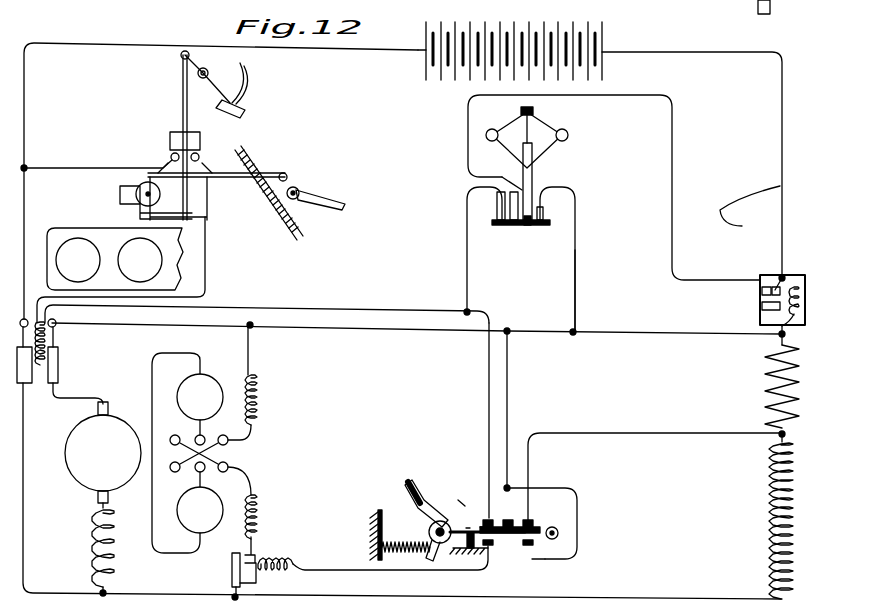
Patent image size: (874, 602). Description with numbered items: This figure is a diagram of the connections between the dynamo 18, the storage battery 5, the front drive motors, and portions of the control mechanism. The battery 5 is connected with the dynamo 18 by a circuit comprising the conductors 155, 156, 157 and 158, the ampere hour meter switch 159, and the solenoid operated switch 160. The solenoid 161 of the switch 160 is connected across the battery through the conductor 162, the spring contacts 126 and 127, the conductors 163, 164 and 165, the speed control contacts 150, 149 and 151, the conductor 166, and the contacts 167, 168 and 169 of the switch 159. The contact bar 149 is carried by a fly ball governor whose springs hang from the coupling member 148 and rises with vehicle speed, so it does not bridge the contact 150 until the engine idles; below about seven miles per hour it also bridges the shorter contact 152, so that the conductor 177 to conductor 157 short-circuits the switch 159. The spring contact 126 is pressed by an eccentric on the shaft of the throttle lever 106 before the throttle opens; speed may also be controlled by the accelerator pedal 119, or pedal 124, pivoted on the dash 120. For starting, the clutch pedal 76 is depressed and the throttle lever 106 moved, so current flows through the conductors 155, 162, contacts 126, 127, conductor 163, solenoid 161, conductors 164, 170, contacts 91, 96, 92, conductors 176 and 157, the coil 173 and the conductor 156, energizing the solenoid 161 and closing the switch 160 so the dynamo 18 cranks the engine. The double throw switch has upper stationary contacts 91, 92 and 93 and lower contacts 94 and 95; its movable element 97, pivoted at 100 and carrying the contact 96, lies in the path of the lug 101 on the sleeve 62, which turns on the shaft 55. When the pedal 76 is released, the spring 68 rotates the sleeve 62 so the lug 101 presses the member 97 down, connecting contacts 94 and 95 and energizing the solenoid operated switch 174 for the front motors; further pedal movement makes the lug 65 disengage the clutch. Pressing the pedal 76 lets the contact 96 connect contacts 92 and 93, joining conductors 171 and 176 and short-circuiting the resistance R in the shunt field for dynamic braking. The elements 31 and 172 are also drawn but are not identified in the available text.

The storage battery 5 is at (455, 85).
The dynamo 18 is at (95, 478).
The relay coils 31 is at (205, 385).
The shaft 55 is at (448, 545).
The sleeve 62 is at (441, 521).
The lug 65 is at (430, 556).
The spring 68 is at (402, 542).
The clutch pedal 76 is at (416, 489).
The upper stationary contact 91 is at (482, 522).
The upper stationary contact 92 is at (512, 520).
The upper stationary contact 93 is at (540, 528).
The lower stationary contact 94 is at (495, 545).
The lower stationary contact 95 is at (552, 558).
The contact 96 is at (498, 518).
The movable element 97 is at (470, 525).
The pivot 100 is at (562, 533).
The lug 101 is at (462, 500).
The throttle lever 106 is at (236, 93).
The accelerator pedal 119 is at (298, 195).
The dash 120 is at (305, 228).
The pedal 124 is at (338, 206).
The spring contact 126 is at (170, 158).
The second spring contact 127 is at (233, 447).
The coupling member 148 is at (535, 112).
The contact bar 149 is at (503, 225).
The contact 150 is at (497, 205).
The contact 151 is at (528, 226).
The contact 152 is at (545, 213).
The conductor 155 is at (380, 52).
The conductor 156 is at (708, 53).
The conductor 157 is at (392, 333).
The conductor 158 is at (25, 575).
The ampere hour meter switch 159 is at (772, 288).
The solenoid operated switch 160 is at (60, 376).
The solenoid 161 is at (48, 338).
The conductor 162 is at (68, 167).
The conductor 163 is at (205, 243).
The conductor 164 is at (340, 308).
The conductor 165 is at (467, 243).
The conductor 166 is at (672, 247).
The contact 167 is at (762, 292).
The contact 168 is at (789, 285).
The contact 169 is at (762, 307).
The conductor 170 is at (488, 433).
The conductor 171 is at (603, 432).
The resistance coil 172 is at (768, 548).
The coil 173 is at (795, 287).
The solenoid operated switch 174 is at (280, 560).
The conductor 176 is at (508, 385).
The conductor 177 is at (574, 283).
The resistance R is at (765, 387).